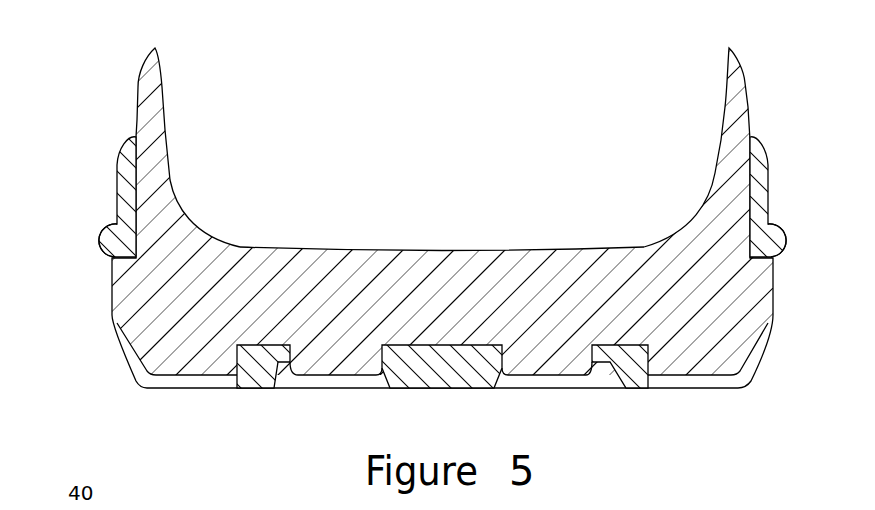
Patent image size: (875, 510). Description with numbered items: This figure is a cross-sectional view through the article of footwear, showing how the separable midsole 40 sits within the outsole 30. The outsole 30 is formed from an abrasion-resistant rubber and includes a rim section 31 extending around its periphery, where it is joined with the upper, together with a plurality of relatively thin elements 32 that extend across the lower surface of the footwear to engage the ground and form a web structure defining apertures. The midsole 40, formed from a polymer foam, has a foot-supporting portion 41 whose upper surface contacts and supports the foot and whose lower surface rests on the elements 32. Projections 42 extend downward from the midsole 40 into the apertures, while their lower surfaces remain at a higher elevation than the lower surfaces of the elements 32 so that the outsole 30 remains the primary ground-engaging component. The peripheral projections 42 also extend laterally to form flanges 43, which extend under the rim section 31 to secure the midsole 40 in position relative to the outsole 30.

The outsole 30 is at (117, 156).
The rim section 31 is at (103, 240).
The elements 32 is at (257, 389).
The midsole 40 is at (130, 78).
The foot-supporting portion 41 is at (462, 248).
The projections 42 is at (190, 377).
The flange 43 is at (112, 288).